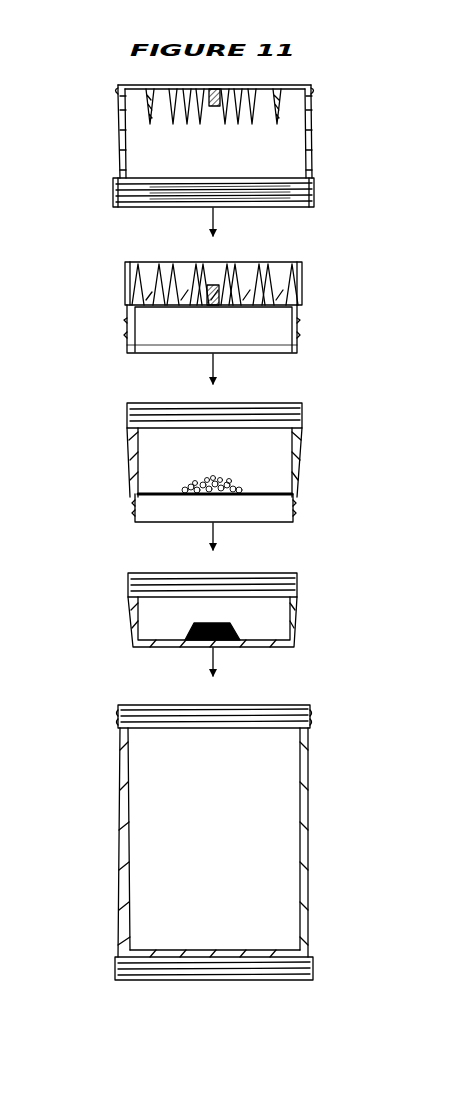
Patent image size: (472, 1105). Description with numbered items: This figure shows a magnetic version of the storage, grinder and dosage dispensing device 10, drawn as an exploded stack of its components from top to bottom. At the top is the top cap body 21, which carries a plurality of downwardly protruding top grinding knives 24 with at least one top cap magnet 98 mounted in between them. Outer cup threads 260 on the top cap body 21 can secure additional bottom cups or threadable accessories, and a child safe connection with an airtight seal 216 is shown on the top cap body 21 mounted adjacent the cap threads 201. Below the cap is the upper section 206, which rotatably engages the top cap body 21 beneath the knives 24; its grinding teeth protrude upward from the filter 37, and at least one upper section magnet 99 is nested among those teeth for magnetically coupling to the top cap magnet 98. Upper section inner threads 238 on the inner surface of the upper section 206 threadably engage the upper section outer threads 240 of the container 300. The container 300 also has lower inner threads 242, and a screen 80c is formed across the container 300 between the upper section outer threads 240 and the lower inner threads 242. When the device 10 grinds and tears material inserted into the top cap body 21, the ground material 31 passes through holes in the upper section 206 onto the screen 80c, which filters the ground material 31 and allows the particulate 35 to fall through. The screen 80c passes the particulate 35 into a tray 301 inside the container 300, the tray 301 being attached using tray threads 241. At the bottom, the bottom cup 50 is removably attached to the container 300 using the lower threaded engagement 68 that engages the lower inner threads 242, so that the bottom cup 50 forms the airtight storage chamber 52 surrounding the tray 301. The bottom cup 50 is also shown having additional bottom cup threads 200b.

The storage, grinder and dosage dispensing device 10 is at (86, 80).
The top cap body 21 is at (312, 120).
The outer cup threads 260 is at (118, 92).
The downwardly protruding top grinding knives 24 is at (150, 124).
The top cap magnet 98 is at (213, 107).
The child safe connection with an airtight seal 216 is at (128, 183).
The cap threads 201 is at (308, 204).
The upper section magnet 99 is at (213, 284).
The upper section 206 is at (303, 292).
The filter 37 is at (163, 305).
The upper section inner threads 238 is at (298, 346).
The upper section outer threads 240 is at (133, 408).
The ground material 31 is at (190, 482).
The screen 80c is at (258, 491).
The container 300 is at (301, 447).
The lower inner threads 242 is at (296, 516).
The tray threads 241 is at (134, 578).
The particulate 35 is at (240, 633).
The tray 301 is at (299, 608).
The lower threaded engagement 68 is at (311, 715).
The bottom cup 50 is at (309, 812).
The airtight storage chamber 52 is at (284, 882).
The additional bottom cup threads 200b is at (118, 972).